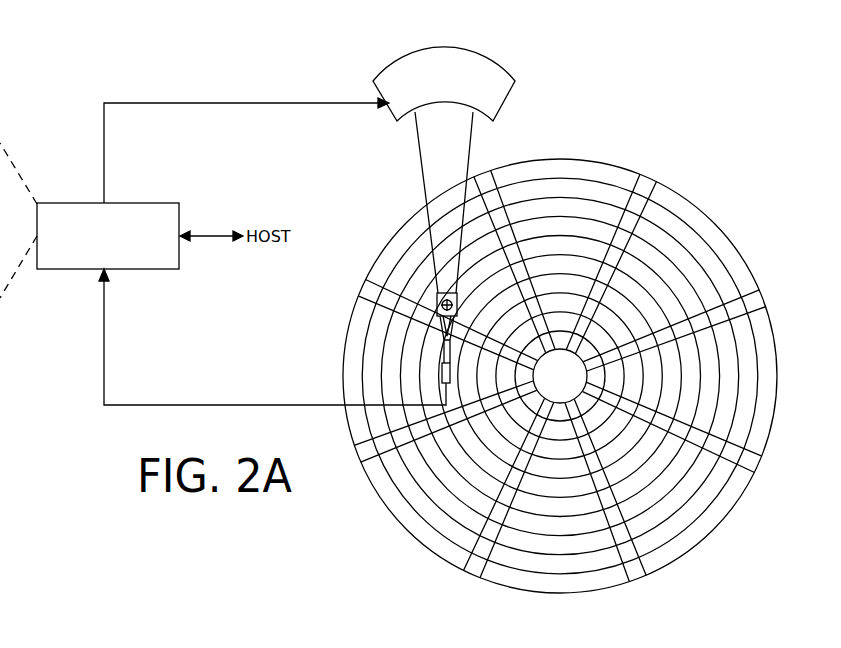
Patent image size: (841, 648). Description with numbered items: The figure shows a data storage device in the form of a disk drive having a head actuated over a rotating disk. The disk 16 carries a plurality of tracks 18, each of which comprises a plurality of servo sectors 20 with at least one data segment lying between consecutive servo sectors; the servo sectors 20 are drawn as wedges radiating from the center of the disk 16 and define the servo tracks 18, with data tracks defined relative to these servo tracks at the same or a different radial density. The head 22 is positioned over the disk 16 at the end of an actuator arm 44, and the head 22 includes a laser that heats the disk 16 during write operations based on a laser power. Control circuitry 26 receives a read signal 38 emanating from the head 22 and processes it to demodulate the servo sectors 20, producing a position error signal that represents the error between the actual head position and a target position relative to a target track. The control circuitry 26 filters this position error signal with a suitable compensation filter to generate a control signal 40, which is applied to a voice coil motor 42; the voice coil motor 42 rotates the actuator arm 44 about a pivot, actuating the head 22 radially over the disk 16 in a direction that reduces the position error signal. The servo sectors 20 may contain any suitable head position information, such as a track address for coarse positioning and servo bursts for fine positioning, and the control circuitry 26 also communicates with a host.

The disk 16 is at (558, 371).
The tracks 18 is at (541, 187).
The servo sectors 20 is at (558, 382).
The head 22 is at (432, 369).
The control circuitry 26 is at (147, 203).
The read signal 38 is at (258, 405).
The control signal 40 is at (104, 138).
The voice coil motor 42 is at (394, 119).
The actuator arm 44 is at (427, 168).